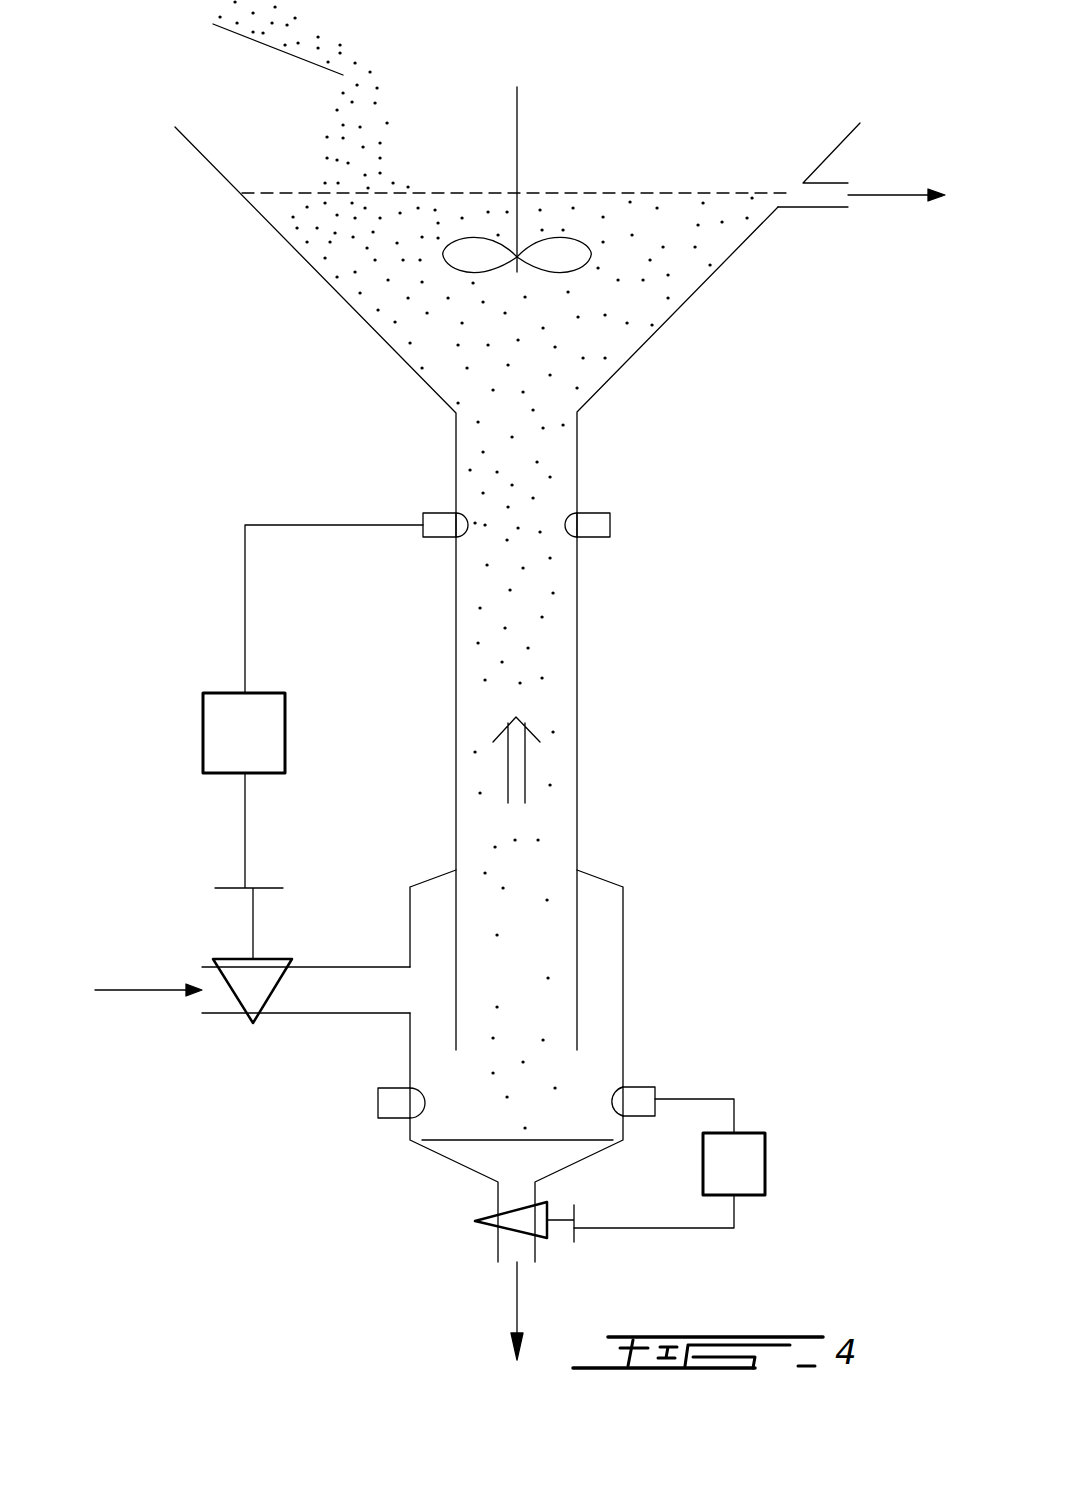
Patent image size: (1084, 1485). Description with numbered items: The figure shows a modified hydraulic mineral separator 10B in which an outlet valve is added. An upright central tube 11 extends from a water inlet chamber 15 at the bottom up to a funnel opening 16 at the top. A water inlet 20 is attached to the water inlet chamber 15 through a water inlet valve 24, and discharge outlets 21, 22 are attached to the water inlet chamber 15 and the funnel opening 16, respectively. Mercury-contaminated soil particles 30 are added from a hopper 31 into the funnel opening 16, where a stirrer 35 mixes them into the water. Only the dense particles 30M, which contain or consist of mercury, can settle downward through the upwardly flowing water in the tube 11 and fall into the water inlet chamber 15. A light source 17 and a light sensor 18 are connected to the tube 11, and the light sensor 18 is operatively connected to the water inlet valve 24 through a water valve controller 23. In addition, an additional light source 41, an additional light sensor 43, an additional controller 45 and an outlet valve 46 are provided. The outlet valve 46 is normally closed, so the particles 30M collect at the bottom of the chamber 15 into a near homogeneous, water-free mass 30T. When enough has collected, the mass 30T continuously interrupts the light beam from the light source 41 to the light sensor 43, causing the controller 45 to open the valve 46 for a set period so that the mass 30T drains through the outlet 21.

The hydraulic mineral separator 10B is at (768, 570).
The upright central tube 11 is at (577, 675).
The water inlet chamber 15 is at (623, 1025).
The funnel opening 16 is at (638, 352).
The light source 17 is at (600, 525).
The light sensor 18 is at (440, 520).
The water inlet 20 is at (363, 967).
The discharge outlet 21 is at (498, 1240).
The discharge outlet 22 is at (808, 207).
The water valve controller 23 is at (263, 721).
The water inlet valve 24 is at (250, 1023).
The soil particles 30 is at (388, 100).
The dense soil particles 30M is at (505, 888).
The water free mass 30T is at (530, 1177).
The hopper 31 is at (298, 58).
The stirrer 35 is at (518, 153).
The additional light source 41 is at (390, 1103).
The additional light sensor 43 is at (648, 1090).
The additional controller 45 is at (747, 1163).
The outlet valve 46 is at (547, 1240).